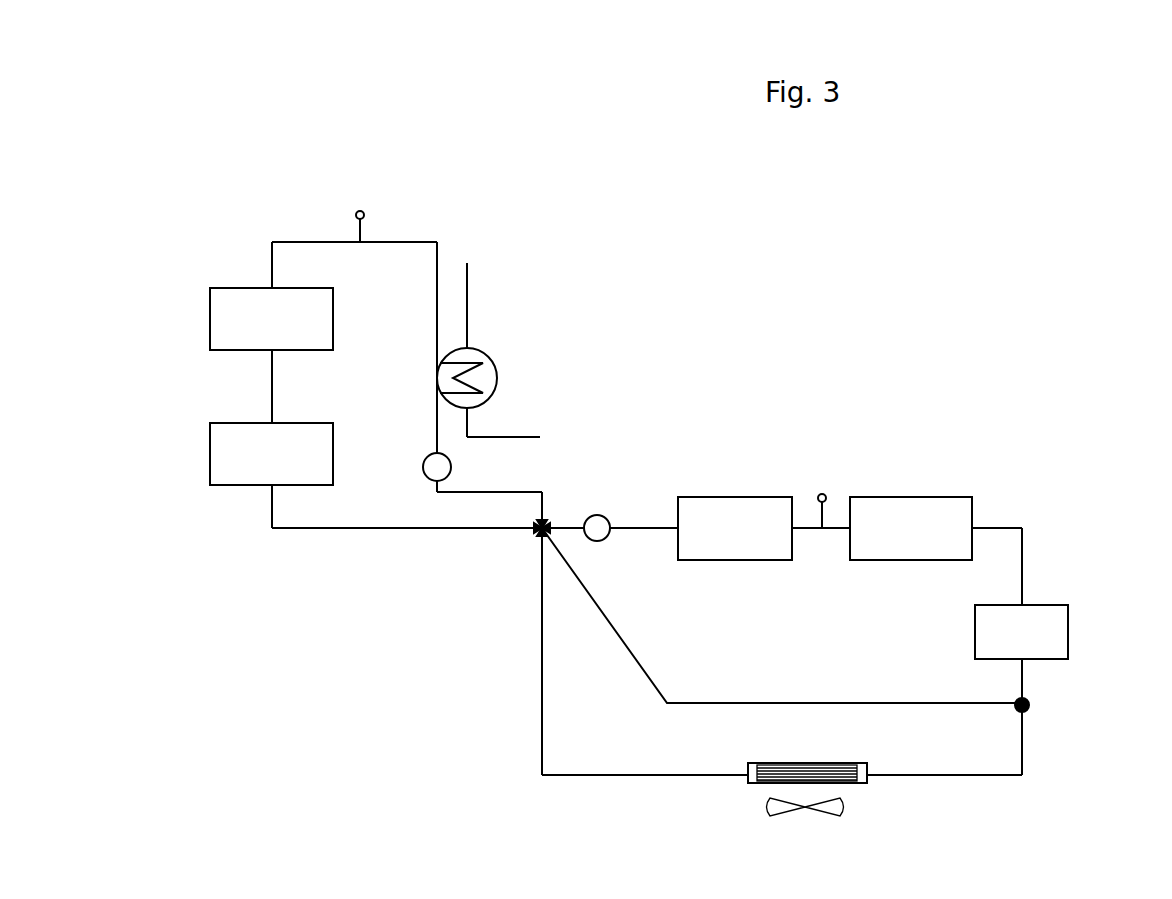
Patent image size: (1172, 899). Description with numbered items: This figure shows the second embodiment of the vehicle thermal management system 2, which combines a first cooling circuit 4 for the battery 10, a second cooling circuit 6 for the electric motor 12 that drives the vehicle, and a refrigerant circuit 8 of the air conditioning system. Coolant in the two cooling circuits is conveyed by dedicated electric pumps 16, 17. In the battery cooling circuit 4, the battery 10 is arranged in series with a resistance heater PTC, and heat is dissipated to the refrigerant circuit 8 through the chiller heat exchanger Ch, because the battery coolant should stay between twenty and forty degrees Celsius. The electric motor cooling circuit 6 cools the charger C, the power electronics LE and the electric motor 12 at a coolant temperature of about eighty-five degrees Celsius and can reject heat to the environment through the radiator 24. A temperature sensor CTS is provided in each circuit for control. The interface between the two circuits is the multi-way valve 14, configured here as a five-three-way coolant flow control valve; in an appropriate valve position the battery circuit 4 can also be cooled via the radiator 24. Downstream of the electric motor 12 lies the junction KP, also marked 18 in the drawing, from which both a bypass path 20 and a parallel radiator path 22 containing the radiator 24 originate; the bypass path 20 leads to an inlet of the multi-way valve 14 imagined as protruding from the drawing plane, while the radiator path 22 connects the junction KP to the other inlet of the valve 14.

The thermal management system 2 is at (337, 77).
The temperature sensor CTS is at (330, 198).
The resistance heater PTC is at (268, 302).
The battery 10 is at (268, 440).
The refrigerant circuit 8 is at (508, 280).
The heat exchanger Ch is at (528, 353).
The electric pump 17 is at (451, 467).
The first cooling circuit 4 is at (329, 588).
The multi-way valve 14 is at (510, 557).
The electric pump 16 is at (595, 522).
The charger C is at (720, 523).
The power electronics LE is at (895, 523).
The second cooling circuit 6 is at (1064, 506).
The electric motor 12 is at (1023, 618).
The junction KP is at (1028, 700).
The junction 18 is at (1063, 704).
The bypass path 20 is at (727, 703).
The radiator path 22 is at (948, 775).
The radiator 24 is at (778, 773).